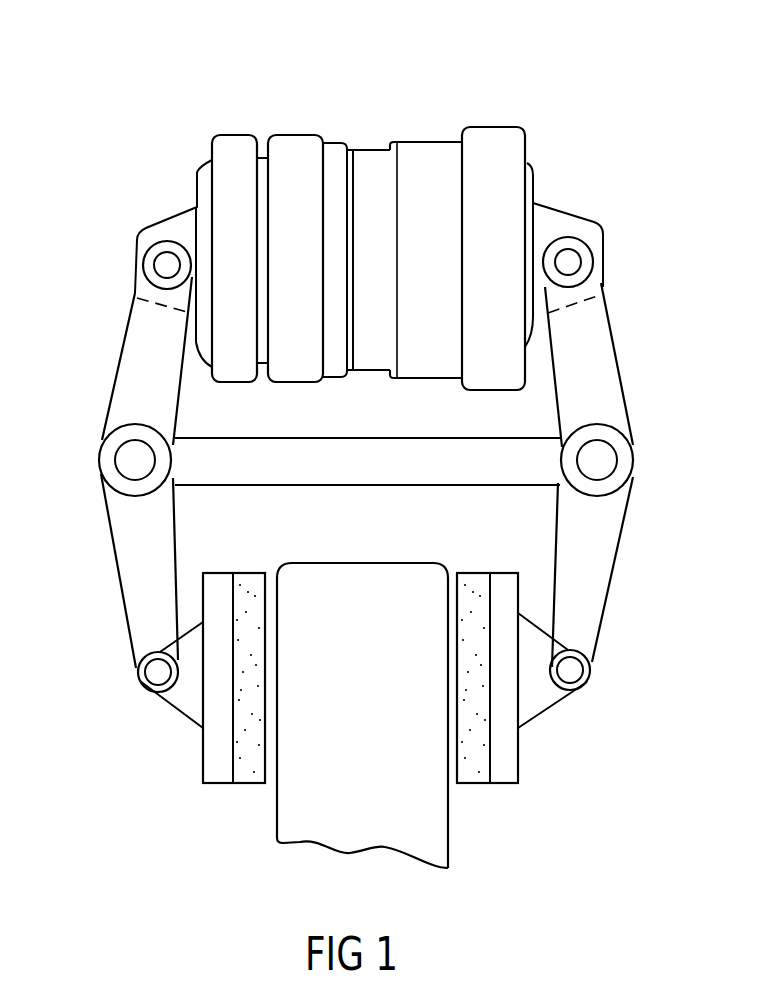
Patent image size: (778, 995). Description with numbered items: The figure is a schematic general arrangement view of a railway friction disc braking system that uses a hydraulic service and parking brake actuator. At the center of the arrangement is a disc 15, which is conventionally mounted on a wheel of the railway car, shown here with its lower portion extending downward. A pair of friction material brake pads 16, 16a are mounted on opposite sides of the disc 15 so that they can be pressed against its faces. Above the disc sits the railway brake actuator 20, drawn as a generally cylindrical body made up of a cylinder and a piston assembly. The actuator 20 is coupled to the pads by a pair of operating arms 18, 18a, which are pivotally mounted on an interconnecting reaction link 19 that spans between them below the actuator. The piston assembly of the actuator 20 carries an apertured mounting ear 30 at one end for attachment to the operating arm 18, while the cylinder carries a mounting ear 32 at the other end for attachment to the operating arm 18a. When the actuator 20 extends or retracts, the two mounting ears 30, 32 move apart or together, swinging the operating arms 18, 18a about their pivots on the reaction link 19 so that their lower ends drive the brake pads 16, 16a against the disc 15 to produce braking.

The railway brake actuator 20 is at (427, 120).
The mounting ear 30 is at (137, 238).
The mounting ear 32 is at (580, 230).
The operating arm 18 is at (132, 390).
The operating arm 18a is at (600, 382).
The interconnecting reaction link 19 is at (368, 457).
The disc 15 is at (418, 583).
The friction material brake pad 16 is at (218, 758).
The friction material brake pad 16a is at (505, 765).